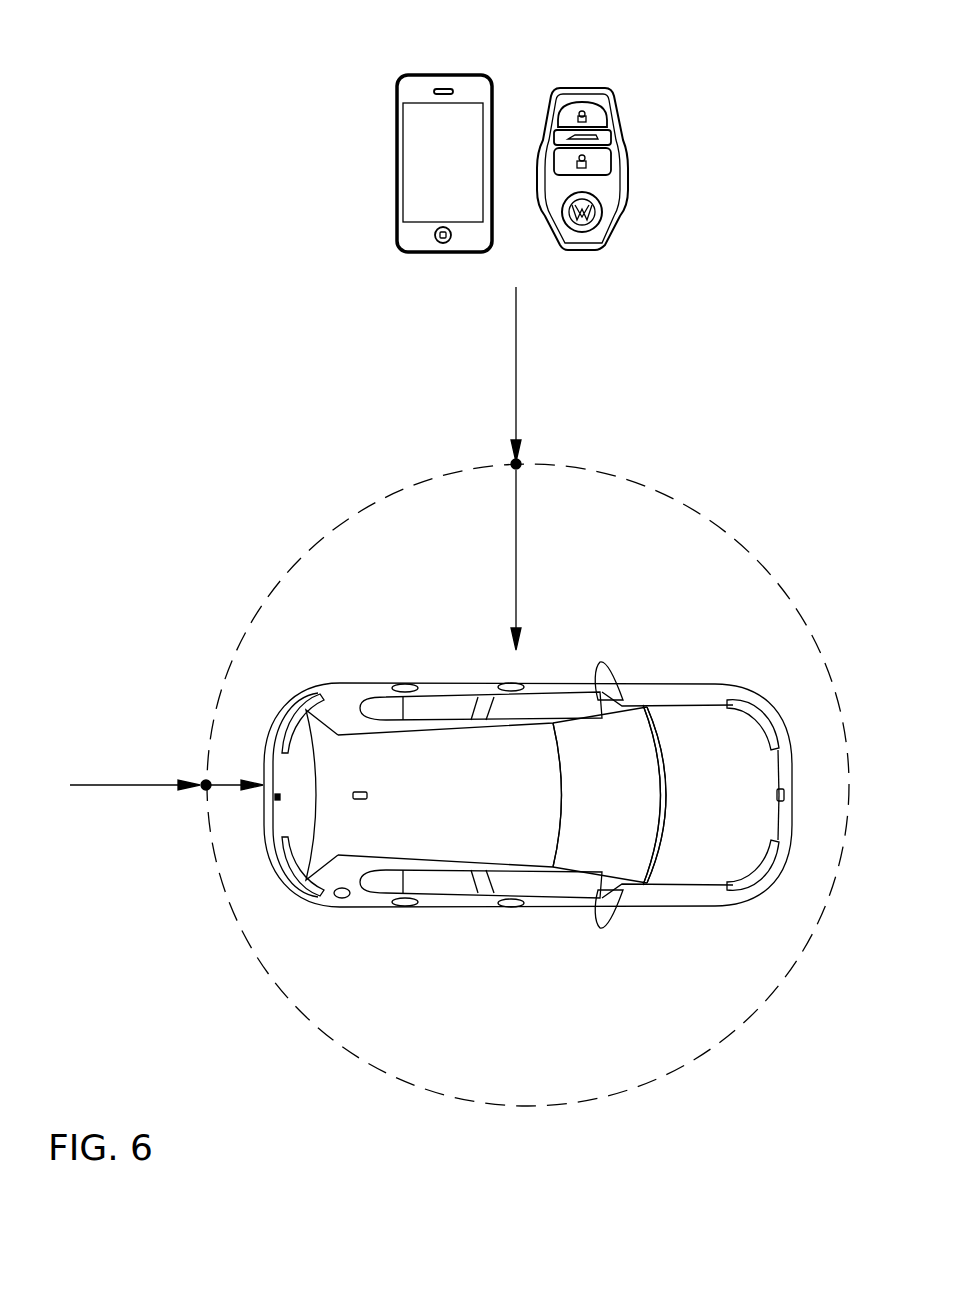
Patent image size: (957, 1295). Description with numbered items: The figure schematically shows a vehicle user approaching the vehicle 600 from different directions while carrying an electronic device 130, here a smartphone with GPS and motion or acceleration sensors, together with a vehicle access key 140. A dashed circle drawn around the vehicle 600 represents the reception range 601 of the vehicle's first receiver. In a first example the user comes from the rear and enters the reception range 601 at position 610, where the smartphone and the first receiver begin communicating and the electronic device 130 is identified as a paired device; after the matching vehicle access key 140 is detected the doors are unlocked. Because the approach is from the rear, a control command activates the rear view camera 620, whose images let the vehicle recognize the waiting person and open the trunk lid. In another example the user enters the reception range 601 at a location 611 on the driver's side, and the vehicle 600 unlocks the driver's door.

The electronic device 130 is at (473, 77).
The vehicle access key 140 is at (580, 88).
The vehicle 600 is at (668, 683).
The reception range 601 is at (260, 610).
The position 610 is at (204, 783).
The location 611 is at (518, 463).
The rear view camera 620 is at (277, 797).